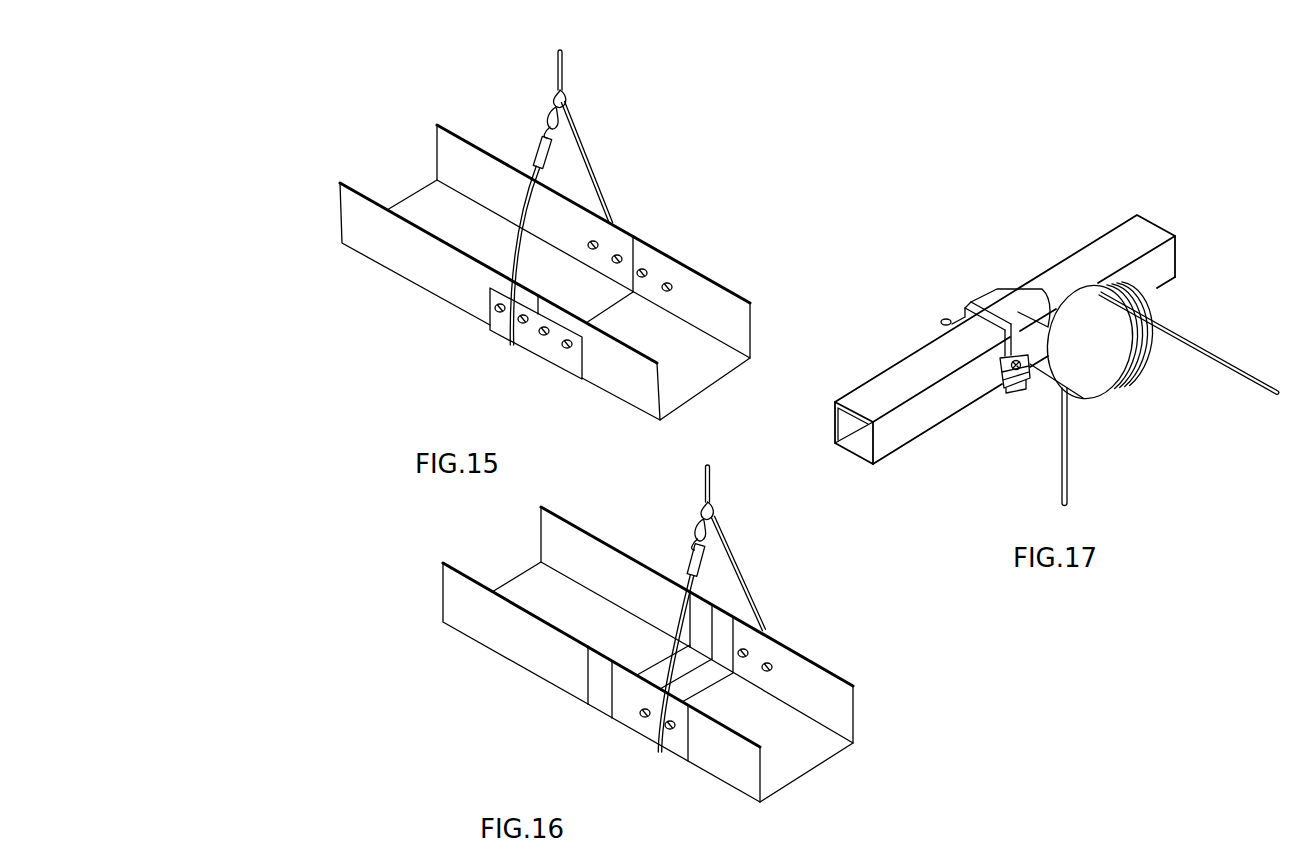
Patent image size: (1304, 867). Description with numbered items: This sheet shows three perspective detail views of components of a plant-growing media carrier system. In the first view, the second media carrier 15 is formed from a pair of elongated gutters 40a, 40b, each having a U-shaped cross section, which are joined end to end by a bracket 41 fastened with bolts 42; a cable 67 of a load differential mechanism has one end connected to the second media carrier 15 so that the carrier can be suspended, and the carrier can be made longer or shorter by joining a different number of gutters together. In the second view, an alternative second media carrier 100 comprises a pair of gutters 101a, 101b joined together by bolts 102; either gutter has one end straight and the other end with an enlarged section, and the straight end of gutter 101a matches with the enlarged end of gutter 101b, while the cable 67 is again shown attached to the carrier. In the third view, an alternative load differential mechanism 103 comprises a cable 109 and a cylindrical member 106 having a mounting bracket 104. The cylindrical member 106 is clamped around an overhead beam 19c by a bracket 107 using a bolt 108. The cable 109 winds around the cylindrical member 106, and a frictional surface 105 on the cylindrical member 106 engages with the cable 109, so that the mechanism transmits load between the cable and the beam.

In FIG. 15, the second media carrier 15 is at (545, 248).
In FIG. 15, the gutter 40a is at (630, 378).
In FIG. 15, the gutter 40b is at (430, 267).
In FIG. 15, the bracket 41 is at (533, 337).
In FIG. 15, the bolts 42 is at (567, 350).
In FIG. 15, the cable 67 is at (562, 82).
In FIG. 16, the cable 67 is at (711, 488).
In FIG. 16, the alternative second media carrier 100 is at (656, 644).
In FIG. 16, the gutter 101a is at (730, 752).
In FIG. 16, the gutter 101b is at (545, 655).
In FIG. 16, the bolts 102 is at (640, 718).
In FIG. 17, the overhead beam 19c is at (1167, 268).
In FIG. 17, the load differential mechanism 103 is at (1086, 392).
In FIG. 17, the mounting bracket 104 is at (972, 312).
In FIG. 17, the frictional surface 105 is at (1127, 350).
In FIG. 17, the cylindrical member 106 is at (1091, 349).
In FIG. 17, the bracket 107 is at (1028, 376).
In FIG. 17, the bolt 108 is at (1032, 380).
In FIG. 17, the cable 109 is at (1197, 346).